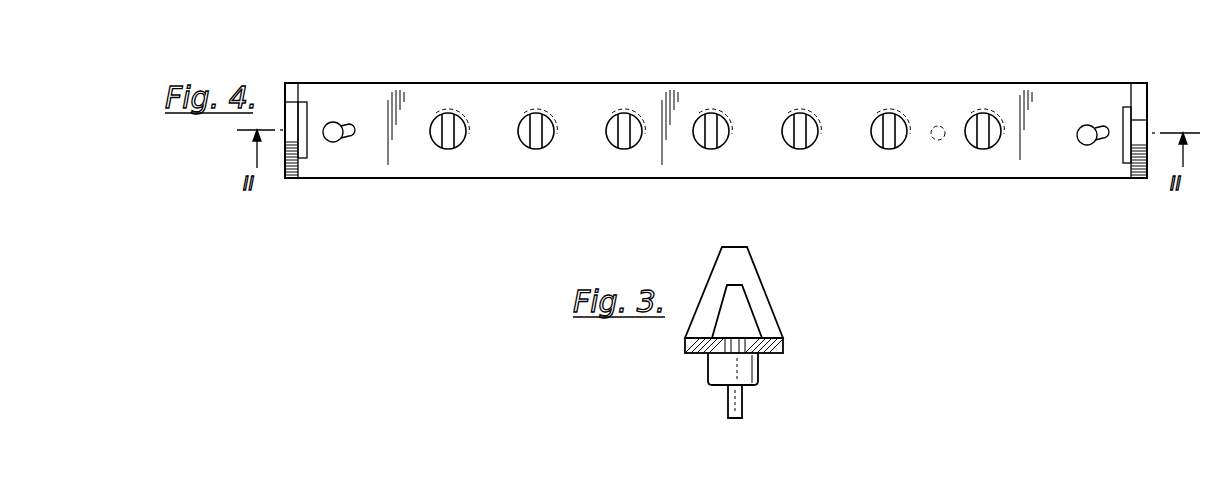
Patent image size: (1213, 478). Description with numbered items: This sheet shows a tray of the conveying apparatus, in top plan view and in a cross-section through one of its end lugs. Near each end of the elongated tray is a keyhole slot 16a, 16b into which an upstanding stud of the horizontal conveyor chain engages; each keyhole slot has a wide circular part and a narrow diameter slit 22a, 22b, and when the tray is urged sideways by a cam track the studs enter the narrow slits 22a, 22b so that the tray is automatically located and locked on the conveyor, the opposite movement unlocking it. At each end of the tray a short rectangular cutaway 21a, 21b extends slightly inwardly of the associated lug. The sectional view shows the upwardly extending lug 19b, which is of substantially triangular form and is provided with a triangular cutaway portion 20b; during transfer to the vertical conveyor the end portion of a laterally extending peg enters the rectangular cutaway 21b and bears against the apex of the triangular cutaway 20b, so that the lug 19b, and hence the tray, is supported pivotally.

In FIG. 4, the keyhole slot 16a is at (335, 134).
In FIG. 4, the keyhole slot 16b is at (1085, 137).
In FIG. 3, the lug 19b is at (758, 275).
In FIG. 3, the triangular cutaway portion 20b is at (742, 320).
In FIG. 4, the rectangular cutaway 21a is at (305, 110).
In FIG. 4, the rectangular cutaway 21b is at (1127, 108).
In FIG. 4, the narrow diameter slit 22a is at (355, 125).
In FIG. 4, the narrow diameter slit 22b is at (1105, 128).